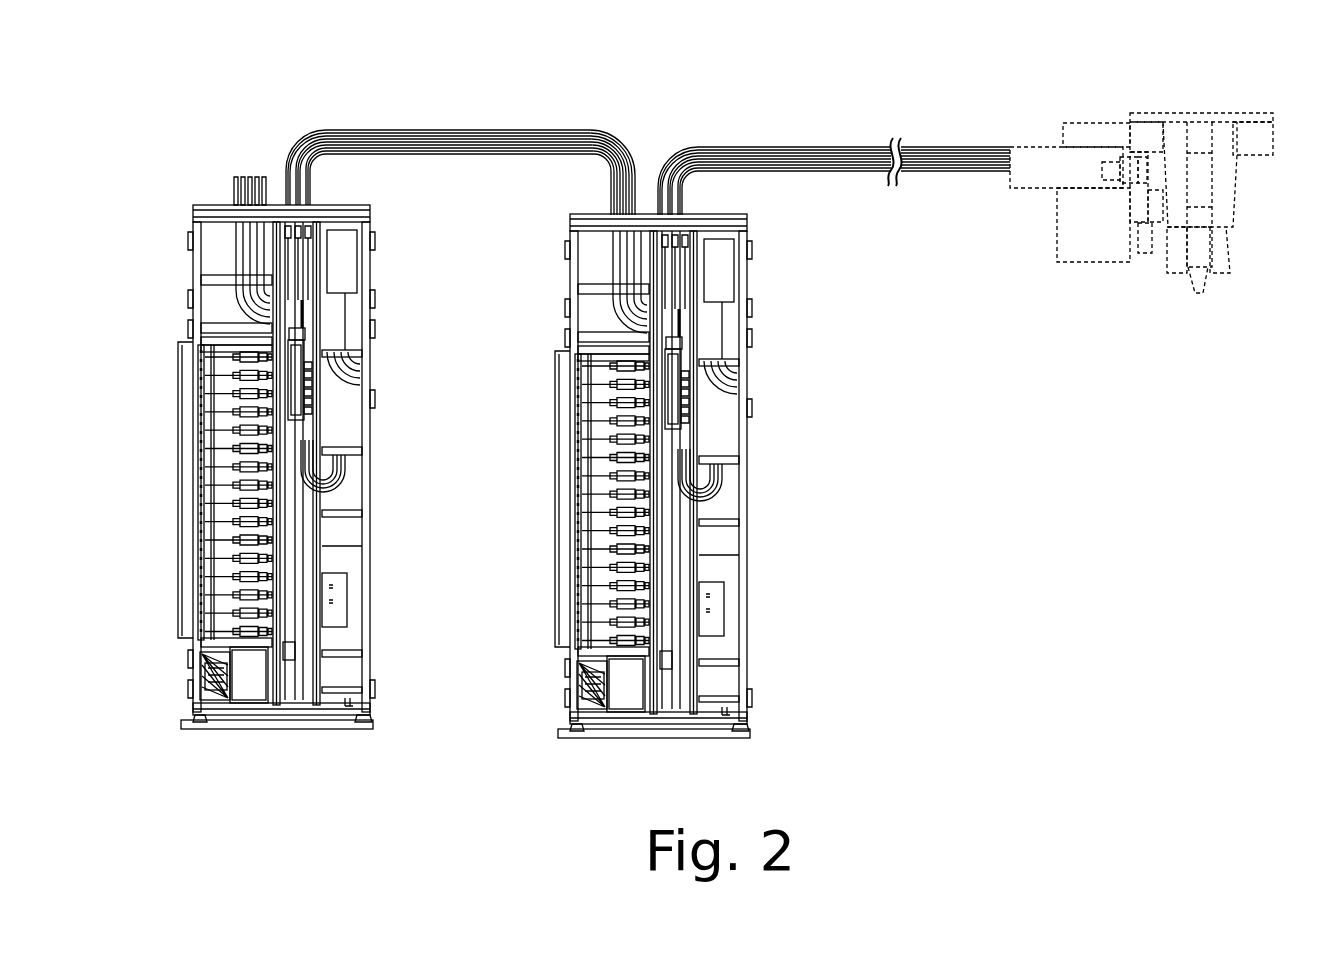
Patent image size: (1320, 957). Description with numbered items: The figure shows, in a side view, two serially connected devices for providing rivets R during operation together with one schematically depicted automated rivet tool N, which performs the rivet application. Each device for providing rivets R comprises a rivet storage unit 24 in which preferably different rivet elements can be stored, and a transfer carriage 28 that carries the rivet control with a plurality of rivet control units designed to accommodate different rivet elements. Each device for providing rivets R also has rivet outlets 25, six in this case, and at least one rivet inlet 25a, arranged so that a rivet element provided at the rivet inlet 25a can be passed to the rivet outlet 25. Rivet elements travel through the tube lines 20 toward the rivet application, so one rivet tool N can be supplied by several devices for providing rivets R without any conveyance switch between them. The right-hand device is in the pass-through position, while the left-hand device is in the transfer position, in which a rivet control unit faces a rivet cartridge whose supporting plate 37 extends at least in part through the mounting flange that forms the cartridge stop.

The device for providing rivets R is at (217, 745).
The automated rivet tool N is at (1224, 290).
The tube lines 20 is at (440, 120).
The rivet storage unit 24 is at (152, 340).
The rivet outlet 25 is at (287, 105).
The rivet inlet 25a is at (215, 165).
The transfer carriage 28 is at (305, 432).
The supporting plate 37 is at (284, 660).